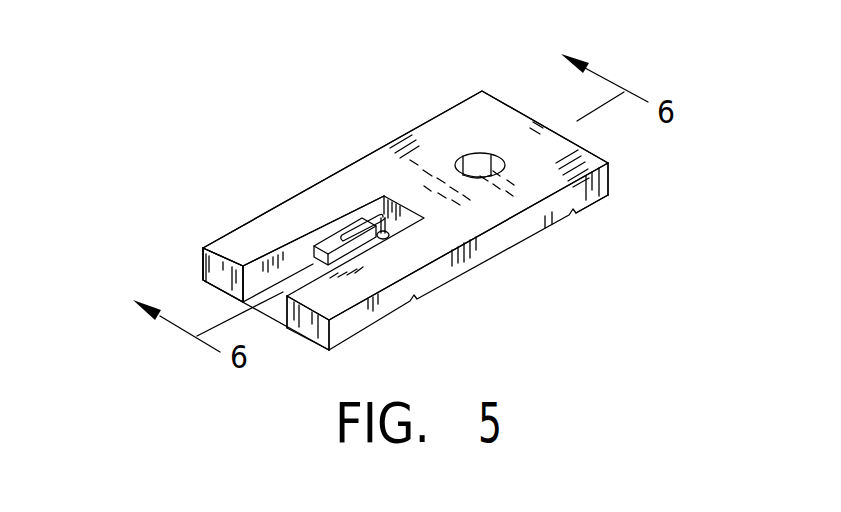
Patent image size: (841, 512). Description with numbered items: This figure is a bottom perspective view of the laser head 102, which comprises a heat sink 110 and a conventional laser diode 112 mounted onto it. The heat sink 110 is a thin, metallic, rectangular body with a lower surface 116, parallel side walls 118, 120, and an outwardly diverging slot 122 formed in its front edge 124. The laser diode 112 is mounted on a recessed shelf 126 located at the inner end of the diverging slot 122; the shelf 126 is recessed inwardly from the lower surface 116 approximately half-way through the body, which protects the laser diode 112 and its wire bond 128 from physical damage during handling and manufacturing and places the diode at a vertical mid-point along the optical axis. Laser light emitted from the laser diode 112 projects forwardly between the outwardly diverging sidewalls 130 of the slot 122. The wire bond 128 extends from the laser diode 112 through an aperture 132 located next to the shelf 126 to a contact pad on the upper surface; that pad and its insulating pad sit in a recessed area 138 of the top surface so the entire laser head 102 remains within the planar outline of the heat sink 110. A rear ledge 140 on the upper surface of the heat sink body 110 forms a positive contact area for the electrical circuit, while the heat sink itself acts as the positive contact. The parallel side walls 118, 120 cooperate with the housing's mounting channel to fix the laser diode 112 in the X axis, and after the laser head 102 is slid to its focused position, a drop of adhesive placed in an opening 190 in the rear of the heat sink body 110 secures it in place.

The laser head 102 is at (630, 243).
The heat sink 110 is at (369, 146).
The laser diode 112 is at (333, 243).
The lower surface 116 is at (537, 177).
The side wall 118 is at (472, 255).
The side wall 120 is at (253, 249).
The outwardly diverging slot 122 is at (272, 315).
The front edge 124 is at (220, 273).
The recessed shelf 126 is at (372, 247).
The wire bond 128 is at (372, 212).
The outwardly diverging sidewalls 130 is at (330, 223).
The aperture 132 is at (392, 214).
The recessed area 138 is at (525, 235).
The rear ledge 140 is at (597, 202).
The opening 190 is at (481, 160).